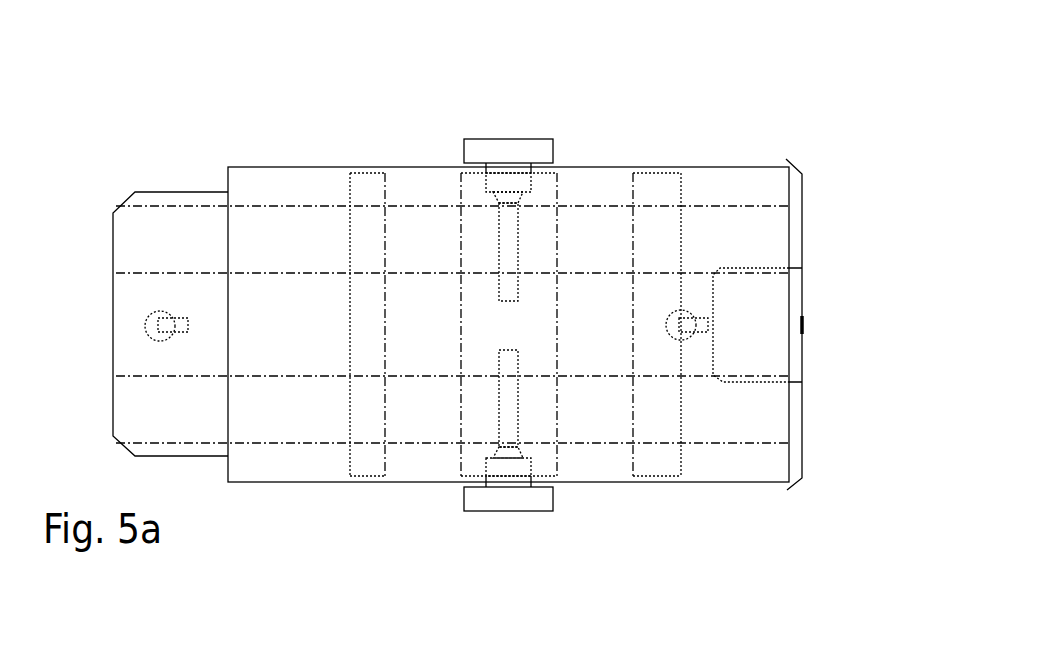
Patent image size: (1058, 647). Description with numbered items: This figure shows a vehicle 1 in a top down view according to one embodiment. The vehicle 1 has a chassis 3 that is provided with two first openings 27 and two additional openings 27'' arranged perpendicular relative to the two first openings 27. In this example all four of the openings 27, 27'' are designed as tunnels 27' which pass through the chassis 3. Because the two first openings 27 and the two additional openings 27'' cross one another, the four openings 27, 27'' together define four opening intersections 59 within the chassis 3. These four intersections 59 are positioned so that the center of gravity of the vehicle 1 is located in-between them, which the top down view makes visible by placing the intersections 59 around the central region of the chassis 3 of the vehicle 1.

The vehicle 1 is at (267, 83).
The chassis 3 is at (186, 170).
The first openings 27 is at (650, 402).
The tunnels 27' is at (507, 402).
The additional openings 27'' is at (792, 324).
The opening intersections 59 is at (442, 256).